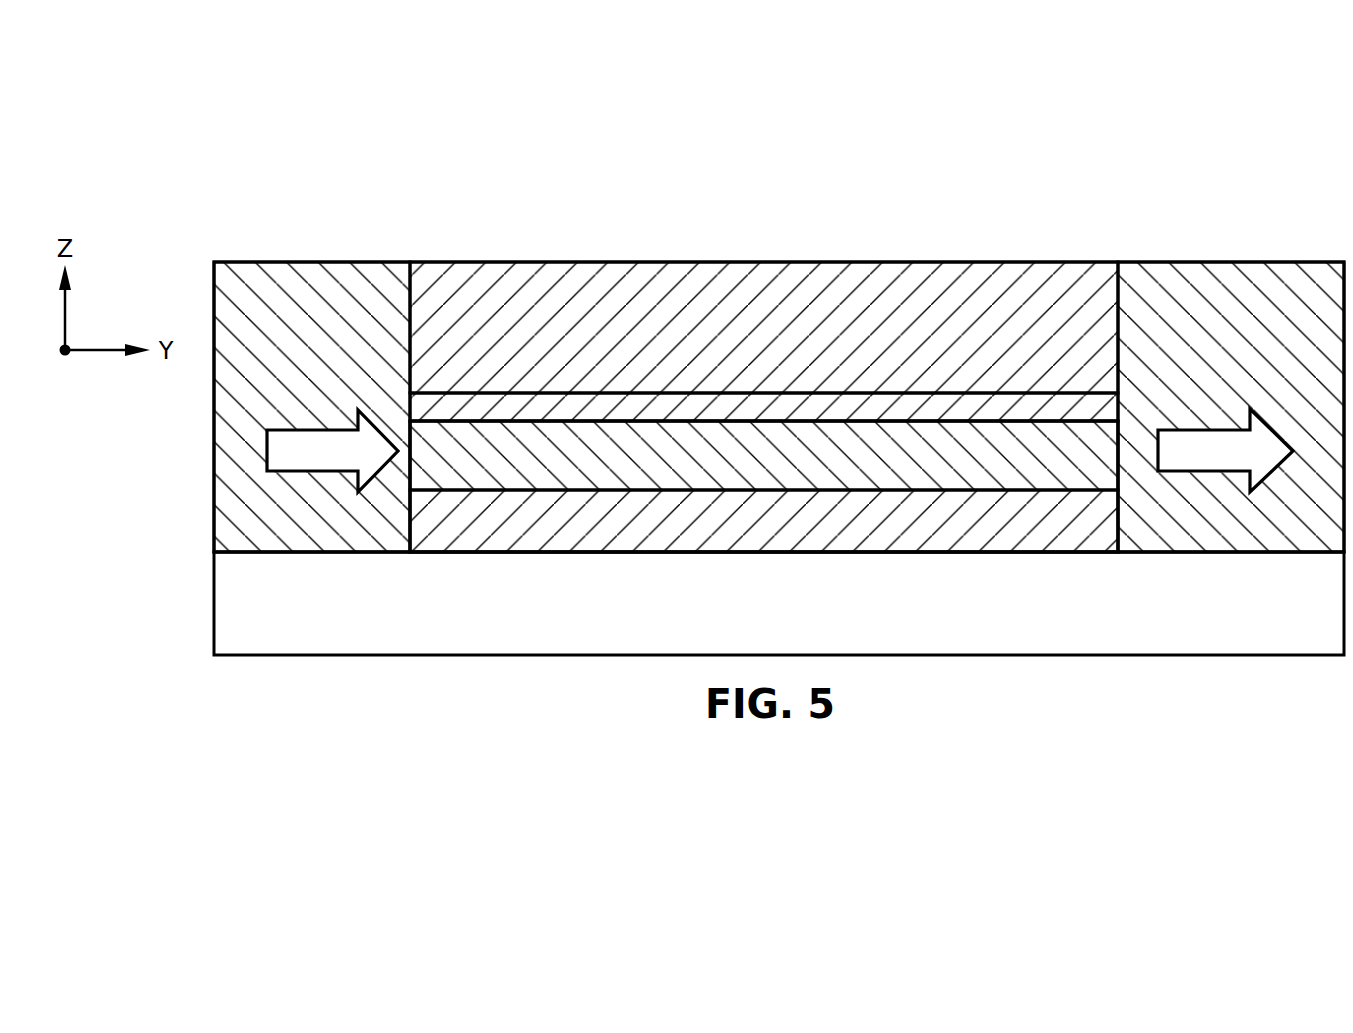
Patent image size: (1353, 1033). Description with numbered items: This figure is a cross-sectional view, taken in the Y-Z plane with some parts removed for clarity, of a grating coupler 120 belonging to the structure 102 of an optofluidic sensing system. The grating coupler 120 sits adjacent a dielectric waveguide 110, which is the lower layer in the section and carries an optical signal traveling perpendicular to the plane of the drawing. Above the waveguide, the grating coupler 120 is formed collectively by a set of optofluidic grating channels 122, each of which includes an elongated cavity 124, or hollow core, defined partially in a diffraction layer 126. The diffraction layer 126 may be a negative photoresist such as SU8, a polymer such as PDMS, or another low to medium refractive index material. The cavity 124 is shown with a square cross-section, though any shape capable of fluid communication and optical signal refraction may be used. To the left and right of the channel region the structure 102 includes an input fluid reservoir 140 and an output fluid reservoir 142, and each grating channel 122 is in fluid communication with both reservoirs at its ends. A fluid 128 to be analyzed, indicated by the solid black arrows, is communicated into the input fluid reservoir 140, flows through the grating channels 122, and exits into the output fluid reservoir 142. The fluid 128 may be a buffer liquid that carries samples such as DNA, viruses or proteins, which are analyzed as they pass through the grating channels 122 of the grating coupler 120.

The structure 102 is at (844, 244).
The dielectric waveguide 110 is at (488, 528).
The grating coupler 120 is at (1047, 466).
The grating channel 122 is at (899, 466).
The cavity 124 is at (732, 408).
The diffraction layer 126 is at (986, 392).
The fluid 128 is at (276, 448).
The input fluid reservoir 140 is at (313, 305).
The output fluid reservoir 142 is at (1223, 305).